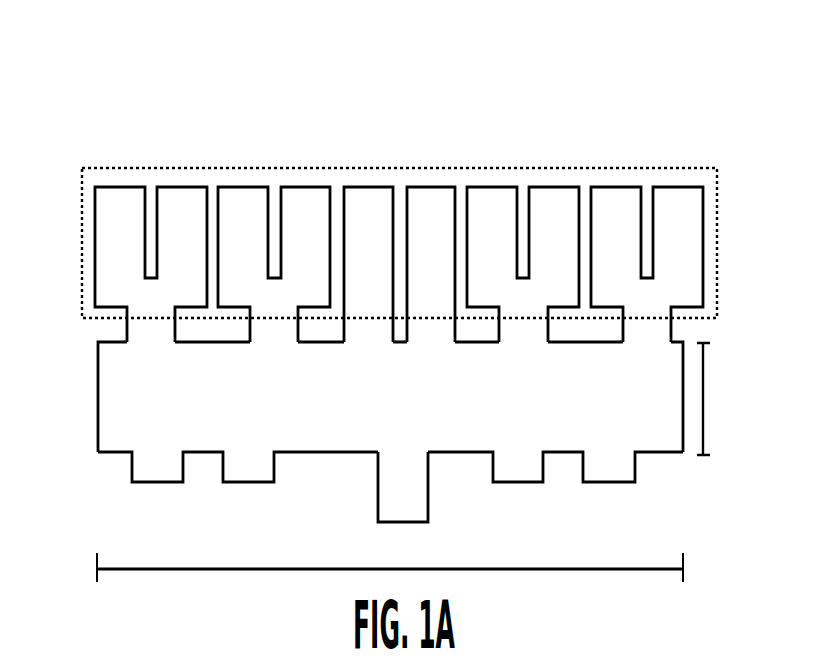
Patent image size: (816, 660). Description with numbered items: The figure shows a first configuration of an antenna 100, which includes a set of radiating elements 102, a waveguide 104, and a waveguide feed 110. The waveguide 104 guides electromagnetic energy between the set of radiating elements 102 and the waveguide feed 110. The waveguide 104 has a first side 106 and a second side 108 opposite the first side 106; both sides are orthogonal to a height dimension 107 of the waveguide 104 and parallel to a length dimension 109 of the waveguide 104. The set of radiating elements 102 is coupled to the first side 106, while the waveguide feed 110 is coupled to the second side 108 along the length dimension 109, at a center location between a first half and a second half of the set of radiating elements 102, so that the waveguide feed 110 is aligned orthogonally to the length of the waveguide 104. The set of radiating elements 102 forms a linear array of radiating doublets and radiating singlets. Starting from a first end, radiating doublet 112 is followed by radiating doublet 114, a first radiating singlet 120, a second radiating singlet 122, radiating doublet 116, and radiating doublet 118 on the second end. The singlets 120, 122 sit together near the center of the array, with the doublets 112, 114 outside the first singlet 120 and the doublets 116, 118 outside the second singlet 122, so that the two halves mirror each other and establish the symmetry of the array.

The antenna 100 is at (186, 98).
The set of radiating elements 102 is at (83, 242).
The waveguide 104 is at (98, 407).
The first side 106 is at (315, 342).
The height dimension 107 is at (703, 403).
The second side 108 is at (307, 455).
The length dimension 109 is at (97, 562).
The waveguide feed 110 is at (428, 507).
The radiating doublet 112 is at (120, 187).
The radiating doublet 114 is at (247, 187).
The radiating doublet 116 is at (550, 187).
The radiating doublet 118 is at (677, 187).
The first radiating singlet 120 is at (370, 187).
The second radiating singlet 122 is at (432, 187).